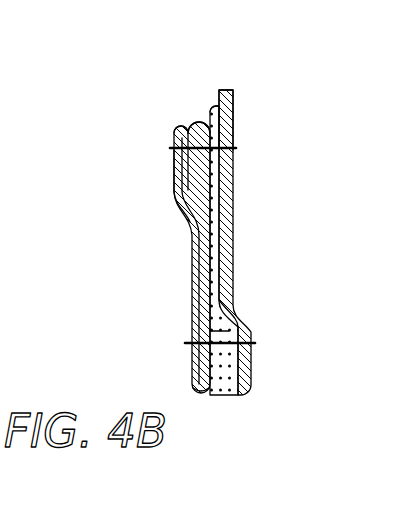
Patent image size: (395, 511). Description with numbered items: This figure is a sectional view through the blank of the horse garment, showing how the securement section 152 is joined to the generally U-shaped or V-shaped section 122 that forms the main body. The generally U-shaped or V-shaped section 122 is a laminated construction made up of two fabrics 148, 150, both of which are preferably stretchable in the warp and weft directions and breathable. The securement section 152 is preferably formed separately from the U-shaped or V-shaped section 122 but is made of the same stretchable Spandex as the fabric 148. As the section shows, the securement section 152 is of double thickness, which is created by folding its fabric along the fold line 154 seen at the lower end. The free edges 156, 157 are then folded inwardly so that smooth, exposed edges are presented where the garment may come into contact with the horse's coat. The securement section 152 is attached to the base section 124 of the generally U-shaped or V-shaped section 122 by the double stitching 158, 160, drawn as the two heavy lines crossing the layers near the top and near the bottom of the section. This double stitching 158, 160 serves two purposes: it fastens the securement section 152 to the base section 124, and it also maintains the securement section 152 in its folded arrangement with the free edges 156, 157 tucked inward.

The generally U-shaped or V-shaped section 122 is at (210, 238).
The base section 124 is at (232, 276).
The fabric 148 is at (232, 108).
The fabric 150 is at (213, 104).
The securement section 152 is at (190, 366).
The fold line 154 is at (203, 396).
The free edge 156 is at (263, 170).
The free edge 157 is at (262, 250).
The double stitching 158 is at (170, 148).
The double stitching 160 is at (190, 343).